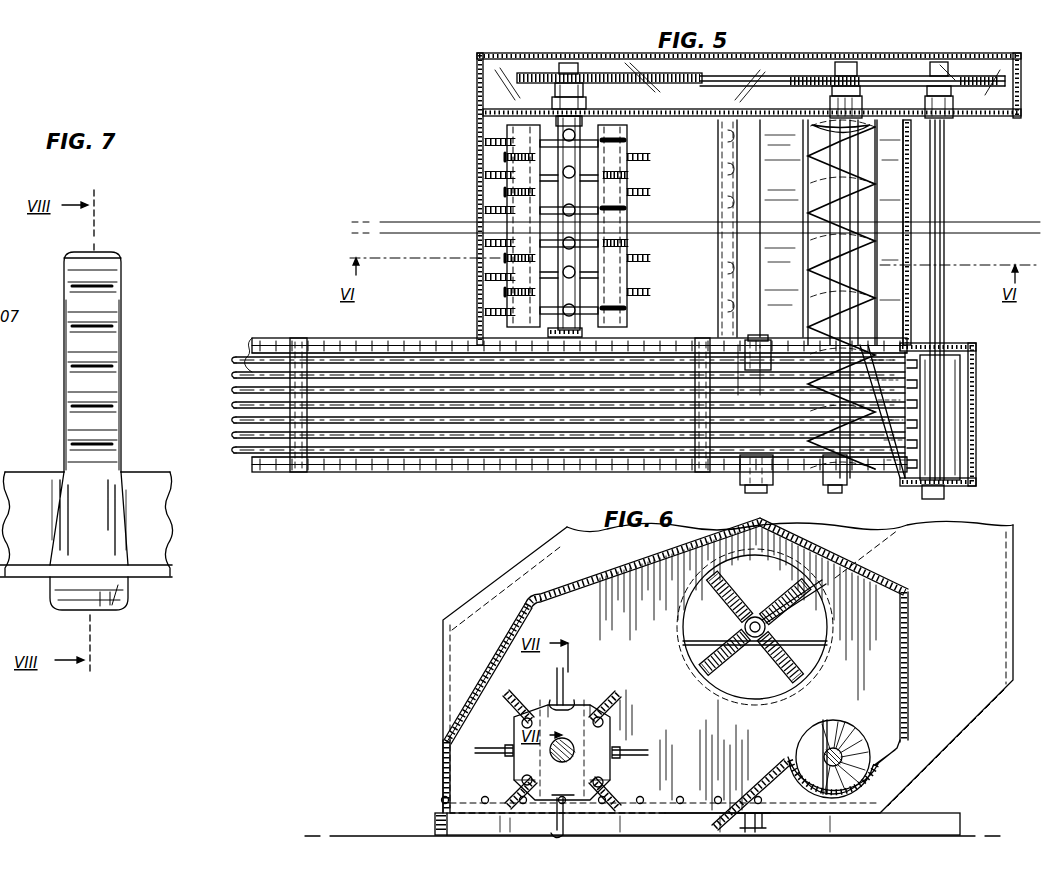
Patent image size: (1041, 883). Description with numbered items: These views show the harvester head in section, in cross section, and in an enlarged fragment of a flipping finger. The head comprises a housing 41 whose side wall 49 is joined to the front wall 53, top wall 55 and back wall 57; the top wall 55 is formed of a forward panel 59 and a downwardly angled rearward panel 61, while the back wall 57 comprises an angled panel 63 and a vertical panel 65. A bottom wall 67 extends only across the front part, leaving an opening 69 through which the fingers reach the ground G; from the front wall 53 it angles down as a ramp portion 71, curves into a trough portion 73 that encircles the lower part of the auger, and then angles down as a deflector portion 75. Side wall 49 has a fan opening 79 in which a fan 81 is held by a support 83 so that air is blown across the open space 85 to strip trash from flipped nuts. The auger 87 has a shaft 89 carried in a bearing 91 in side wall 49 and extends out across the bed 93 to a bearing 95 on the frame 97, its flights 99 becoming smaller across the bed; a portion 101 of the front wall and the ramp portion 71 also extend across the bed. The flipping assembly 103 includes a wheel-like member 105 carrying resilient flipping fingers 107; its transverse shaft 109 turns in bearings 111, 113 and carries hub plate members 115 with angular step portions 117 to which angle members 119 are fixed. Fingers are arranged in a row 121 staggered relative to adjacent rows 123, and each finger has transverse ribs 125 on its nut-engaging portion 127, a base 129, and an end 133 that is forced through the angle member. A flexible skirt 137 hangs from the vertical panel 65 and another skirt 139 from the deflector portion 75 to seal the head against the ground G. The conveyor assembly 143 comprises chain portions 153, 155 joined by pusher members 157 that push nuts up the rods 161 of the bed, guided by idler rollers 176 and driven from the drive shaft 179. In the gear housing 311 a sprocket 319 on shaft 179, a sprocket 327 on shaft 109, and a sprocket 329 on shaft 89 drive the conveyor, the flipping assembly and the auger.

In FIG. 6, the housing 41 is at (912, 592).
In FIG. 5, the side wall 49 is at (691, 114).
In FIG. 6, the side wall 49 is at (610, 590).
In FIG. 6, the front wall 53 is at (909, 663).
In FIG. 6, the top wall 55 is at (796, 528).
In FIG. 6, the back wall 57 is at (451, 720).
In FIG. 6, the forward panel 59 is at (836, 590).
In FIG. 6, the rearward panel 61 is at (560, 595).
In FIG. 6, the angled panel 63 is at (497, 667).
In FIG. 6, the vertical panel 65 is at (446, 773).
In FIG. 6, the bottom wall 67 is at (885, 764).
In FIG. 5, the opening 69 is at (703, 140).
In FIG. 6, the opening 69 is at (452, 800).
In FIG. 5, the ramp portion 71 is at (893, 322).
In FIG. 6, the ramp portion 71 is at (870, 742).
In FIG. 5, the trough portion 73 is at (802, 177).
In FIG. 6, the trough portion 73 is at (853, 800).
In FIG. 6, the deflector portion 75 is at (765, 780).
In FIG. 6, the fan opening 79 is at (686, 608).
In FIG. 6, the fan 81 is at (742, 678).
In FIG. 6, the support 83 is at (710, 643).
In FIG. 6, the open space 85 is at (862, 648).
In FIG. 5, the auger 87 is at (866, 181).
In FIG. 6, the auger 87 is at (820, 716).
In FIG. 5, the shaft 89 is at (843, 252).
In FIG. 6, the shaft 89 is at (826, 755).
In FIG. 5, the bearing 91 is at (862, 110).
In FIG. 5, the bed 93 is at (934, 373).
In FIG. 5, the bearing 95 is at (846, 481).
In FIG. 5, the frame 97 is at (532, 472).
In FIG. 5, the flights 99 is at (820, 315).
In FIG. 5, the portion of front wall 101 is at (915, 420).
In FIG. 5, the flipping assembly 103 is at (542, 226).
In FIG. 6, the flipping assembly 103 is at (590, 646).
In FIG. 6, the wheel-like member 105 is at (611, 729).
In FIG. 7, the flipping fingers 107 is at (132, 354).
In FIG. 5, the flipping fingers 107 is at (512, 301).
In FIG. 6, the flipping fingers 107 is at (556, 673).
In FIG. 5, the transverse shaft 109 is at (571, 70).
In FIG. 6, the transverse shaft 109 is at (578, 758).
In FIG. 5, the bearing 111 is at (554, 105).
In FIG. 5, the bearing 113 is at (600, 334).
In FIG. 5, the hub plate members 115 is at (618, 207).
In FIG. 6, the hub plate members 115 is at (512, 776).
In FIG. 6, the angular step portions 117 is at (594, 712).
In FIG. 7, the parallel members 119 is at (180, 558).
In FIG. 5, the parallel members 119 is at (508, 191).
In FIG. 6, the parallel members 119 is at (512, 752).
In FIG. 5, the row of flipping fingers 121 is at (523, 122).
In FIG. 5, the adjacent rows 123 is at (496, 130).
In FIG. 7, the transverse ribs 125 is at (105, 292).
In FIG. 7, the nut-engaging portion 127 is at (118, 362).
In FIG. 7, the base 129 is at (120, 540).
In FIG. 7, the end 133 is at (125, 607).
In FIG. 6, the flexible skirt 137 is at (436, 822).
In FIG. 6, the flexible skirt 139 is at (762, 822).
In FIG. 5, the conveyor assembly 143 is at (277, 470).
In FIG. 5, the conveyor chain portion 153 is at (403, 473).
In FIG. 5, the conveyor chain portion 155 is at (362, 340).
In FIG. 5, the pusher members 157 is at (310, 474).
In FIG. 5, the rods 161 is at (237, 376).
In FIG. 5, the idler rollers 176 is at (748, 340).
In FIG. 5, the drive shaft 179 is at (935, 206).
In FIG. 5, the gear housing 311 is at (1001, 121).
In FIG. 5, the sprocket 319 is at (962, 64).
In FIG. 5, the sprocket 327 is at (548, 73).
In FIG. 5, the sprocket 329 is at (818, 76).
In FIG. 6, the ground G is at (960, 836).